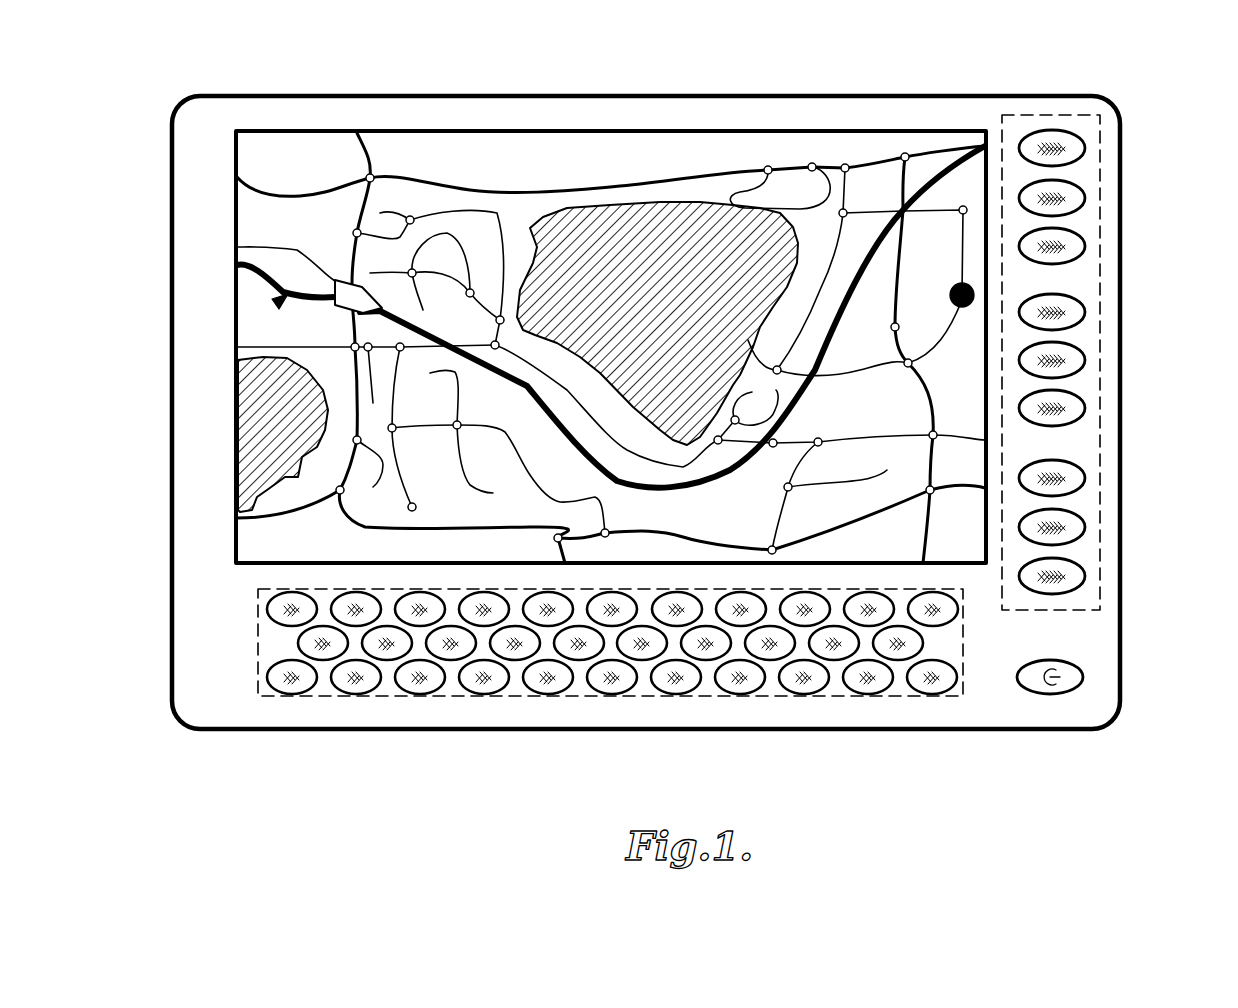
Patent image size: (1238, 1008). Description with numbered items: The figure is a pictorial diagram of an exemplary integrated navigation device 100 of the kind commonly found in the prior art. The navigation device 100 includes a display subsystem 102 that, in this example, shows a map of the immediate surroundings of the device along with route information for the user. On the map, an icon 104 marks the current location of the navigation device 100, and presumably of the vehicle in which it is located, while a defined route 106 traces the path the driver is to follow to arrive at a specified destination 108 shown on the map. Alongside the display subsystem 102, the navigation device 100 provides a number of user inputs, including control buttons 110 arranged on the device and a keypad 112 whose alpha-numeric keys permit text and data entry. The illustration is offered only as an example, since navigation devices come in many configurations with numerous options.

The navigation device 100 is at (657, 96).
The display subsystem 102 is at (790, 131).
The icon 104 is at (343, 290).
The defined route 106 is at (280, 300).
The specified destination 108 is at (972, 292).
The control buttons 110 is at (1102, 197).
The keypad 112 is at (256, 645).